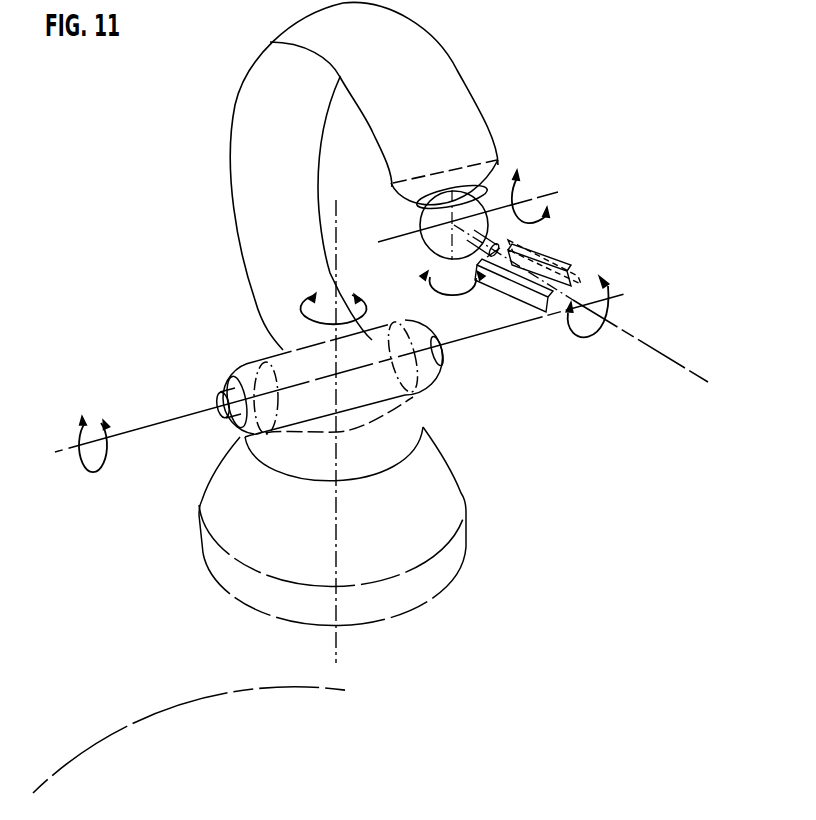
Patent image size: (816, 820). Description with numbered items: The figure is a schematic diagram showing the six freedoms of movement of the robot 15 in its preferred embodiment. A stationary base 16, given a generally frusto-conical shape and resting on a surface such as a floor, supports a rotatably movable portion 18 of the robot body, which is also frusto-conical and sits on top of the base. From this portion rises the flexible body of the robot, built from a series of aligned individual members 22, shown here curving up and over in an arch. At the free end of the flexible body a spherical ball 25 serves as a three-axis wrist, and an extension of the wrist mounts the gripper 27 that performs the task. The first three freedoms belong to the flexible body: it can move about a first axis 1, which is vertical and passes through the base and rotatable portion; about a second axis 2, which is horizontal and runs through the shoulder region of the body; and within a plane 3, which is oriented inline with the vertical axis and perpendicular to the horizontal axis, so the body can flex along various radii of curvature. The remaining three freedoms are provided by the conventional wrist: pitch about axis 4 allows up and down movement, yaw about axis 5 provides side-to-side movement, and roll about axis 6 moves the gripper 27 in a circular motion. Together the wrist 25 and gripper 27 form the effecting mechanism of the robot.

The first axis 1 is at (334, 431).
The second axis 2 is at (339, 382).
The plane 3 is at (367, 791).
The pitch axis 4 is at (468, 204).
The yaw axis 5 is at (452, 280).
The roll axis 6 is at (581, 303).
The robot 15 is at (532, 59).
The stationary base 16 is at (465, 512).
The rotatably movable portion 18 is at (403, 436).
The individual members 22 is at (186, 817).
The spherical ball 25 is at (438, 238).
The gripper 27 is at (546, 265).